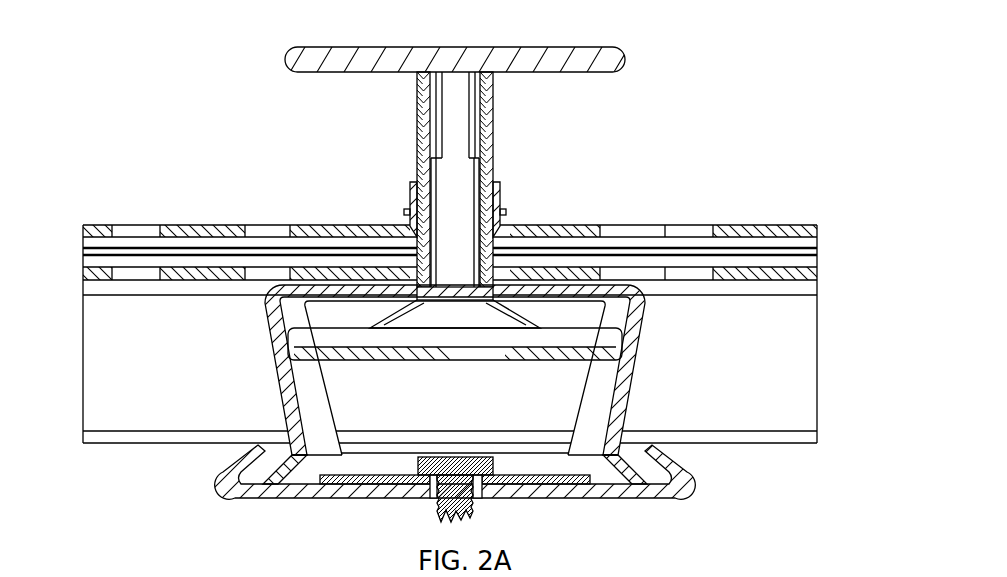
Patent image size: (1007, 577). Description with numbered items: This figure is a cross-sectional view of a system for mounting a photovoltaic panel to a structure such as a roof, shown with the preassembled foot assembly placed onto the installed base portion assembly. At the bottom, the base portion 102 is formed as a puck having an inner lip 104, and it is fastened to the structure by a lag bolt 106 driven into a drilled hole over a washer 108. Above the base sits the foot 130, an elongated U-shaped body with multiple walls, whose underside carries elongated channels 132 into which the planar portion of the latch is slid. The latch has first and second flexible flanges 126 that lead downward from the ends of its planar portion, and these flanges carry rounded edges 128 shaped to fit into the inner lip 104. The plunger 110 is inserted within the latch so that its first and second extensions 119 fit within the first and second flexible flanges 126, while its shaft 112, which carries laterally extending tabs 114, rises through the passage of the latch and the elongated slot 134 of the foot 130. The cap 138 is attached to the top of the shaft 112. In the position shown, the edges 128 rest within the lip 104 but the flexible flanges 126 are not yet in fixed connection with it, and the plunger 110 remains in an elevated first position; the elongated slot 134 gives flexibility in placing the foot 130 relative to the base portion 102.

The base portion 102 is at (711, 482).
The inner lip 104 is at (237, 458).
The lag bolt 106 is at (437, 510).
The washer 108 is at (533, 478).
The plunger 110 is at (388, 106).
The shaft 112 is at (494, 125).
The tab 114 is at (500, 193).
The first and second extensions 119 is at (270, 340).
The first and second flexible flanges 126 is at (272, 383).
The edges 128 is at (283, 465).
The foot 130 is at (749, 225).
The elongated channels 132 is at (818, 287).
The elongated slot 134 is at (633, 225).
The cap 138 is at (609, 47).